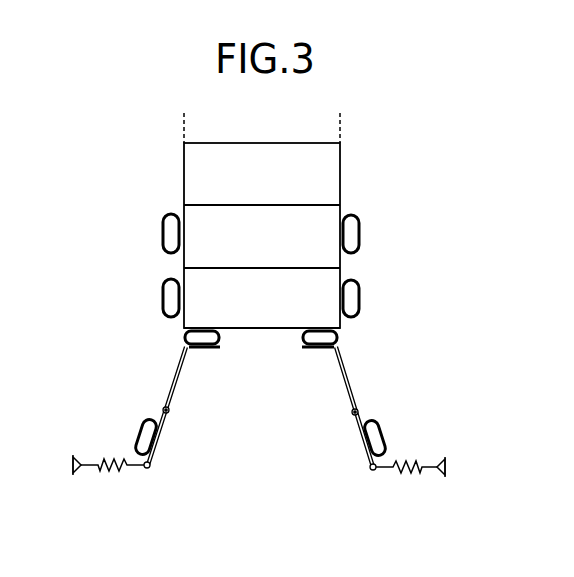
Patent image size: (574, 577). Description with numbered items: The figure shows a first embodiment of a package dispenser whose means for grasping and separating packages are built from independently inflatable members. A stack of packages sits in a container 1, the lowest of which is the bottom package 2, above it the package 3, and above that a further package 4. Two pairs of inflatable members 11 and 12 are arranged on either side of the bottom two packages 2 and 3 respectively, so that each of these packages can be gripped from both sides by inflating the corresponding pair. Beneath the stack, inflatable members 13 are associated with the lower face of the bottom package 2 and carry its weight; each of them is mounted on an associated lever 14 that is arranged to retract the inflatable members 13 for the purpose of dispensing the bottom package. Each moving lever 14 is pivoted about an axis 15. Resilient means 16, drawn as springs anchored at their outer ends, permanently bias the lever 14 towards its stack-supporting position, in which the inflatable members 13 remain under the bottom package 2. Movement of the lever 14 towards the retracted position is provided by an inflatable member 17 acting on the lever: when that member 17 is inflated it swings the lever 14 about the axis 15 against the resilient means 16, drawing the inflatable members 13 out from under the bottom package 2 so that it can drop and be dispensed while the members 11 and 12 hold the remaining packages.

The container 1 is at (349, 154).
The bottom package 2 is at (199, 313).
The package 3 is at (333, 258).
The upper wall section 4 is at (336, 188).
The inflatable members 11 is at (163, 298).
The inflatable members 12 is at (163, 232).
The inflatable members 13 is at (182, 333).
The lever 14 is at (173, 368).
The axis 15 is at (170, 410).
The resilient means 16 is at (128, 470).
The inflatable member 17 is at (145, 423).